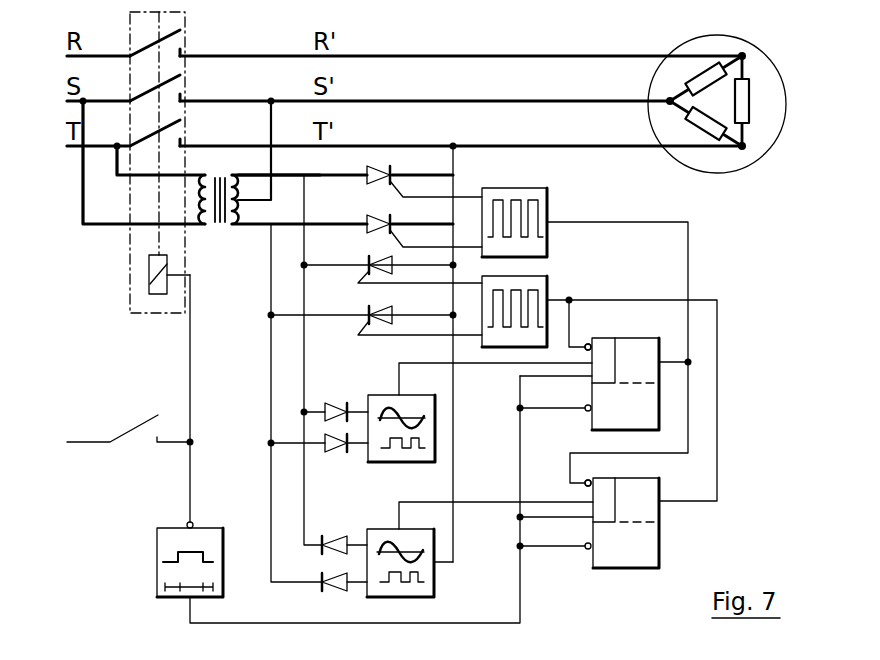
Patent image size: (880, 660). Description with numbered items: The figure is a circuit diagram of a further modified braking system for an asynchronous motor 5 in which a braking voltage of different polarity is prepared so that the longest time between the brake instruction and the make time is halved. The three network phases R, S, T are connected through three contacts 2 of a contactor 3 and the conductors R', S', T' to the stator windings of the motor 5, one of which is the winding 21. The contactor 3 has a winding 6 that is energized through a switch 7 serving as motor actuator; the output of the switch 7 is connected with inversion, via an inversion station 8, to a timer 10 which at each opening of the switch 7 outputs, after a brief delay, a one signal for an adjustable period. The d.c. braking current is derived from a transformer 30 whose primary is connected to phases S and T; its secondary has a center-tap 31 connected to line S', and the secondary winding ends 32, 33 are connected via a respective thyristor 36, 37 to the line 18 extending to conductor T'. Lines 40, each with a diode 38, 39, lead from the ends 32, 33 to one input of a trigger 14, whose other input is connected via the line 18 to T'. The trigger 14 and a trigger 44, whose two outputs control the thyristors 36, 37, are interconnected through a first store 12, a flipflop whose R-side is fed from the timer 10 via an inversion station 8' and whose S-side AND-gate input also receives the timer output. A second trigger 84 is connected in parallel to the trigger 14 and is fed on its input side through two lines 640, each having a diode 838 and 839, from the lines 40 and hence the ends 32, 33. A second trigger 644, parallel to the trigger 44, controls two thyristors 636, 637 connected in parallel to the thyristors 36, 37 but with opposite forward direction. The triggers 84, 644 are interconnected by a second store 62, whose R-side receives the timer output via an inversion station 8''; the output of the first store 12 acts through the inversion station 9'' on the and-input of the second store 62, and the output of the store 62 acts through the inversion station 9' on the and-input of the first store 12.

The contacts 2 is at (157, 40).
The contactor 3 is at (185, 34).
The asynchronous motor 5 is at (717, 122).
The winding 6 is at (149, 275).
The switch 7 is at (126, 430).
The inversion station 8 is at (381, 449).
The inversion station 8' is at (556, 418).
The inversion station 8'' is at (555, 559).
The inversion station 9' is at (587, 334).
The inversion station 9'' is at (589, 470).
The timer 10 is at (157, 572).
The store 12 is at (605, 374).
The trigger 14 is at (401, 463).
The line 18 is at (271, 150).
The winding 21 is at (700, 133).
The transformer 30 is at (220, 222).
The center-tap 31 is at (262, 200).
The end of secondary winding 32 is at (318, 177).
The end of secondary winding 33 is at (318, 223).
The thyristor 36 is at (385, 169).
The thyristor 37 is at (376, 235).
The diode 38 is at (333, 403).
The diode 39 is at (338, 452).
The lines 40 is at (303, 430).
The trigger 44 is at (548, 207).
The second store 62 is at (615, 515).
The second trigger 84 is at (409, 598).
The thyristor 636 is at (390, 263).
The thyristor 637 is at (390, 310).
The lines 640 is at (296, 544).
The second trigger 644 is at (549, 294).
The diode 838 is at (341, 531).
The diode 839 is at (336, 590).